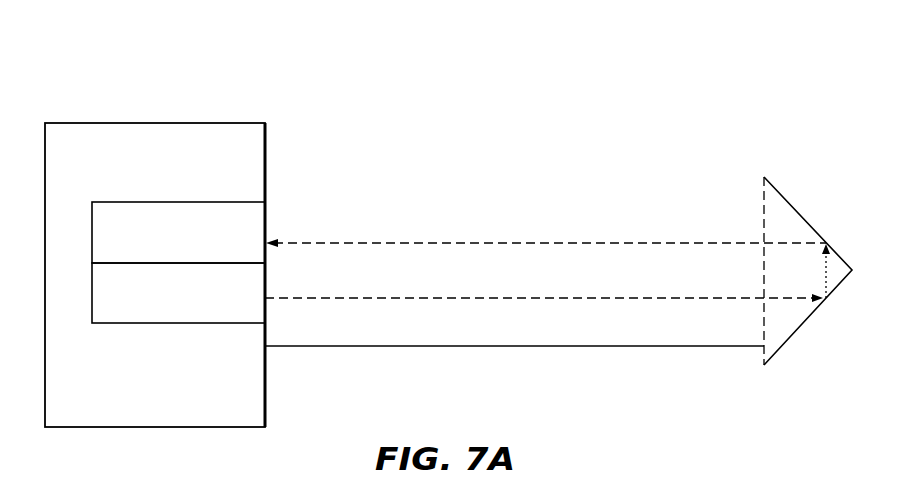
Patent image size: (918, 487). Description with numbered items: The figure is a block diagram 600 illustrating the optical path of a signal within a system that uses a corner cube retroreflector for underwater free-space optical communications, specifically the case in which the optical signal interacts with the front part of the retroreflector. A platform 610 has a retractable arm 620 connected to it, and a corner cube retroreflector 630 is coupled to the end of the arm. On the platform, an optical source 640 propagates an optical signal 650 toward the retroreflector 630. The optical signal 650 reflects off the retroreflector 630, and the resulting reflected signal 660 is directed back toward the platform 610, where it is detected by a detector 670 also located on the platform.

The block diagram 600 is at (108, 88).
The platform 610 is at (266, 156).
The retractable arm 620 is at (593, 348).
The corner cube retroreflector 630 is at (793, 204).
The optical source 640 is at (266, 273).
The optical signal 650 is at (594, 296).
The reflected signal 660 is at (517, 241).
The detector 670 is at (266, 214).